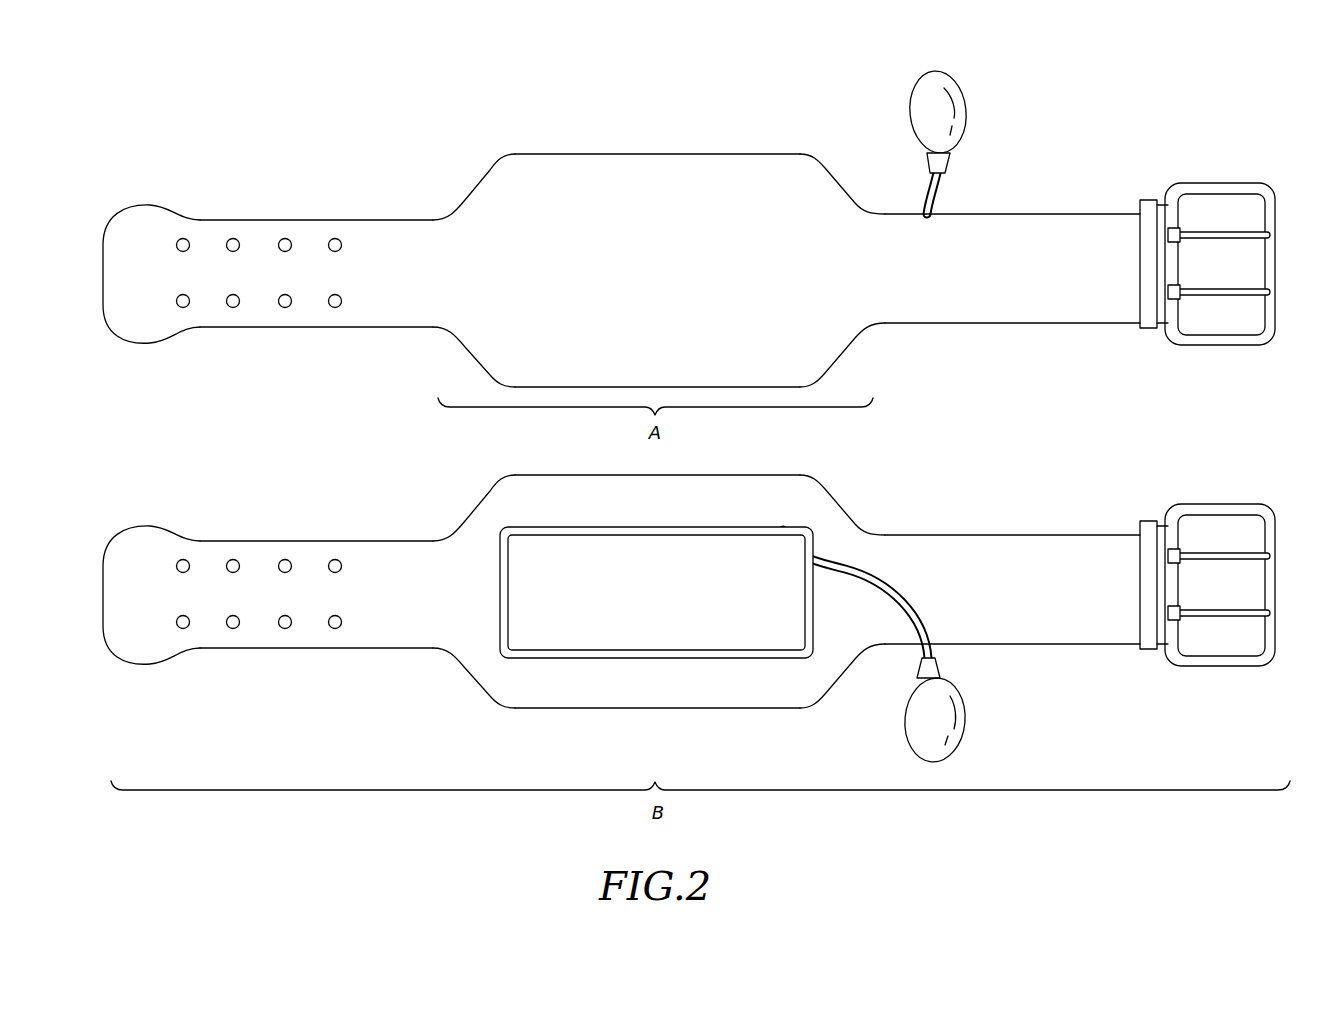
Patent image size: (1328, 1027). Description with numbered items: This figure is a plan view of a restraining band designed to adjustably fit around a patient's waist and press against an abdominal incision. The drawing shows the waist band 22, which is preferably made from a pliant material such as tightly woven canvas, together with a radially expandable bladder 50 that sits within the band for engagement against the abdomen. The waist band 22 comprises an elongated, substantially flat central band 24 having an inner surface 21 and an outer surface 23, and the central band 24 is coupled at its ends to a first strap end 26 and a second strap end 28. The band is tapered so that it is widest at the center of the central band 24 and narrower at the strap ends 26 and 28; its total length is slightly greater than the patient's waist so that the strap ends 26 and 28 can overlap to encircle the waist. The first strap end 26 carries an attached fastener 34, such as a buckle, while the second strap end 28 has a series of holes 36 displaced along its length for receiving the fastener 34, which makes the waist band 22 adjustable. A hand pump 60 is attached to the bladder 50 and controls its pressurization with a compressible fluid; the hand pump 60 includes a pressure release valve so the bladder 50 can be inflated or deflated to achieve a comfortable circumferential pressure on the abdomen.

The inner surface 21 is at (435, 563).
The waist band 22 is at (757, 160).
The outer surface 23 is at (497, 197).
The central band 24 is at (840, 345).
The first strap end 26 is at (1050, 322).
The second strap end 28 is at (213, 232).
The fastener 34 is at (1232, 345).
The holes 36 is at (233, 301).
The bladder 50 is at (656, 642).
The hand pump 60 is at (967, 97).